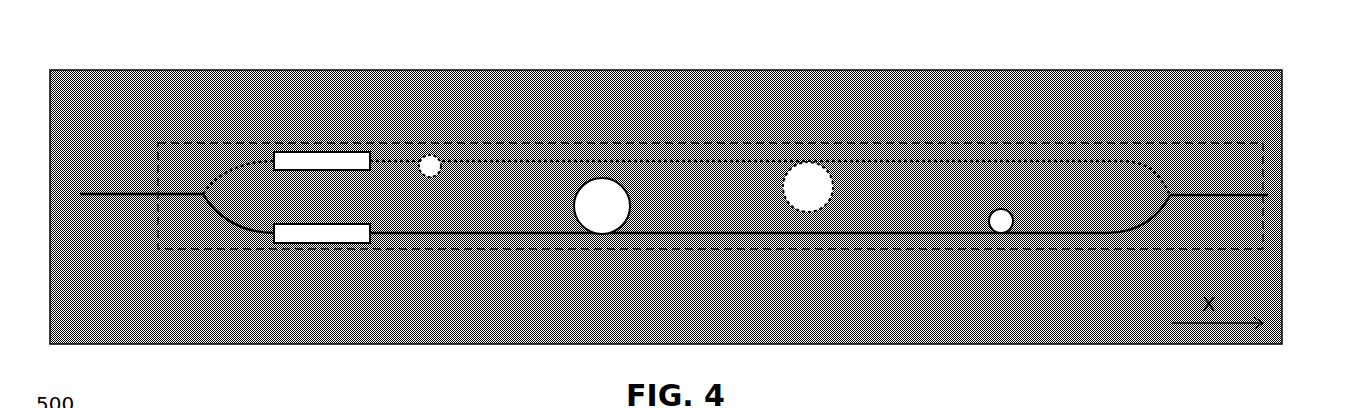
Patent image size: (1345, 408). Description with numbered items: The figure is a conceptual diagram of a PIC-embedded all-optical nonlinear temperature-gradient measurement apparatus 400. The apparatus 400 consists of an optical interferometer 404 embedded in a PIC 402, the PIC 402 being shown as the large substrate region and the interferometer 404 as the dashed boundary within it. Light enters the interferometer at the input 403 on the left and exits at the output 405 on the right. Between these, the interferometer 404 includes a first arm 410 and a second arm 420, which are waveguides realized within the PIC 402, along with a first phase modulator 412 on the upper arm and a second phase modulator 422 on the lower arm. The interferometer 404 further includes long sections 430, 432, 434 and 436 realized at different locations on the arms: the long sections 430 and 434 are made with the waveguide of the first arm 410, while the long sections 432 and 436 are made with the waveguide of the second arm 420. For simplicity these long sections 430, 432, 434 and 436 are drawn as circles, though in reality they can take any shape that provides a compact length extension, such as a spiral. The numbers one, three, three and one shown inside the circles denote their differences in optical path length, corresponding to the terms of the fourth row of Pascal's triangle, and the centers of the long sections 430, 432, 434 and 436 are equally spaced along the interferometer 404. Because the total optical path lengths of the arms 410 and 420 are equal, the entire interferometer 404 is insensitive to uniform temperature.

The PIC-embedded all-optical nonlinear temperature-gradient measurement apparatus 400 is at (138, 64).
The PIC 402 is at (108, 325).
The input light 403 is at (157, 178).
The optical interferometer 404 is at (1264, 150).
The output light 405 is at (1245, 178).
The first arm 410 is at (1046, 160).
The first phase modulator 412 is at (347, 152).
The second arm 420 is at (810, 235).
The second phase modulator 422 is at (350, 244).
The long section 430 is at (441, 158).
The long section 432 is at (630, 220).
The long section 434 is at (831, 177).
The long section 436 is at (1005, 233).